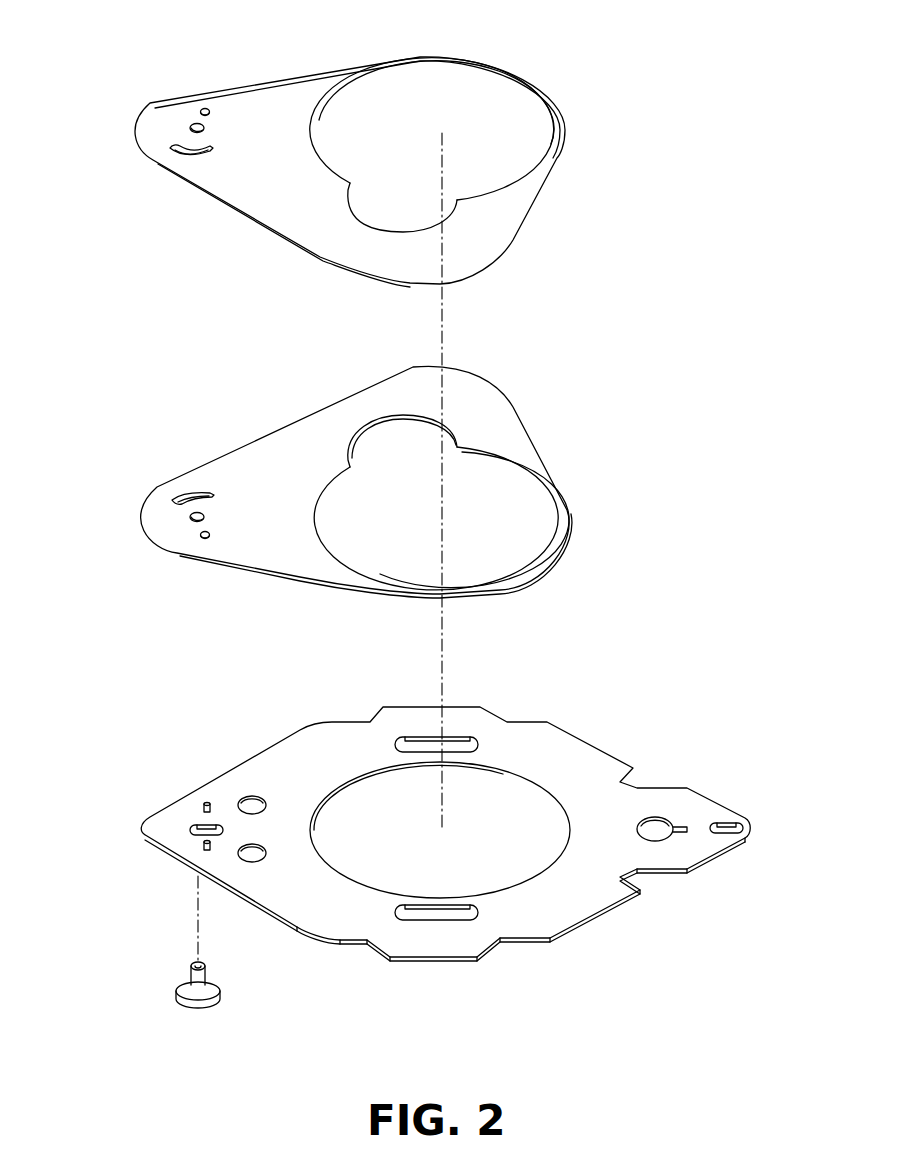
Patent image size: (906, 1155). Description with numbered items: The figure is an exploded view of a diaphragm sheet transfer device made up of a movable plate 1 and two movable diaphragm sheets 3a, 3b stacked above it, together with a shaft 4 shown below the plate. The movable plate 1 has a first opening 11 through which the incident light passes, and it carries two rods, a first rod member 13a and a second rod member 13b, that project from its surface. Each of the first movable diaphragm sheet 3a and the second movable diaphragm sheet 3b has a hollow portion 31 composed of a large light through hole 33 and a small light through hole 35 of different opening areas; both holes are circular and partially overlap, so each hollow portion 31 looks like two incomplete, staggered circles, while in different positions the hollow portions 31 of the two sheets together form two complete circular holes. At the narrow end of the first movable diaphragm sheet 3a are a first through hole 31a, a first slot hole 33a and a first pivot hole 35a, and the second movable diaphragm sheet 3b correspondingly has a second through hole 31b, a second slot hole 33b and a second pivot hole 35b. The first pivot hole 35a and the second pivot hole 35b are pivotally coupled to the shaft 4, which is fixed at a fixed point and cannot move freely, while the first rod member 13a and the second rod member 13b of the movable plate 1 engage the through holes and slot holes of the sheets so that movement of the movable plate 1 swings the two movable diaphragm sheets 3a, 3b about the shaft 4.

The movable plate 1 is at (709, 780).
The first opening 11 is at (495, 785).
The first rod member 13a is at (204, 803).
The second rod member 13b is at (203, 843).
The first movable diaphragm sheet 3a is at (518, 398).
The second movable diaphragm sheet 3b is at (548, 75).
The hollow portion 31 is at (640, 147).
The large light through hole 33 is at (475, 141).
The small light through hole 35 is at (390, 207).
The first through hole 31a is at (203, 535).
The first slot hole 33a is at (185, 500).
The first pivot hole 35a is at (192, 518).
The second through hole 31b is at (202, 110).
The second slot hole 33b is at (172, 147).
The second pivot hole 35b is at (192, 128).
The shaft 4 is at (180, 982).